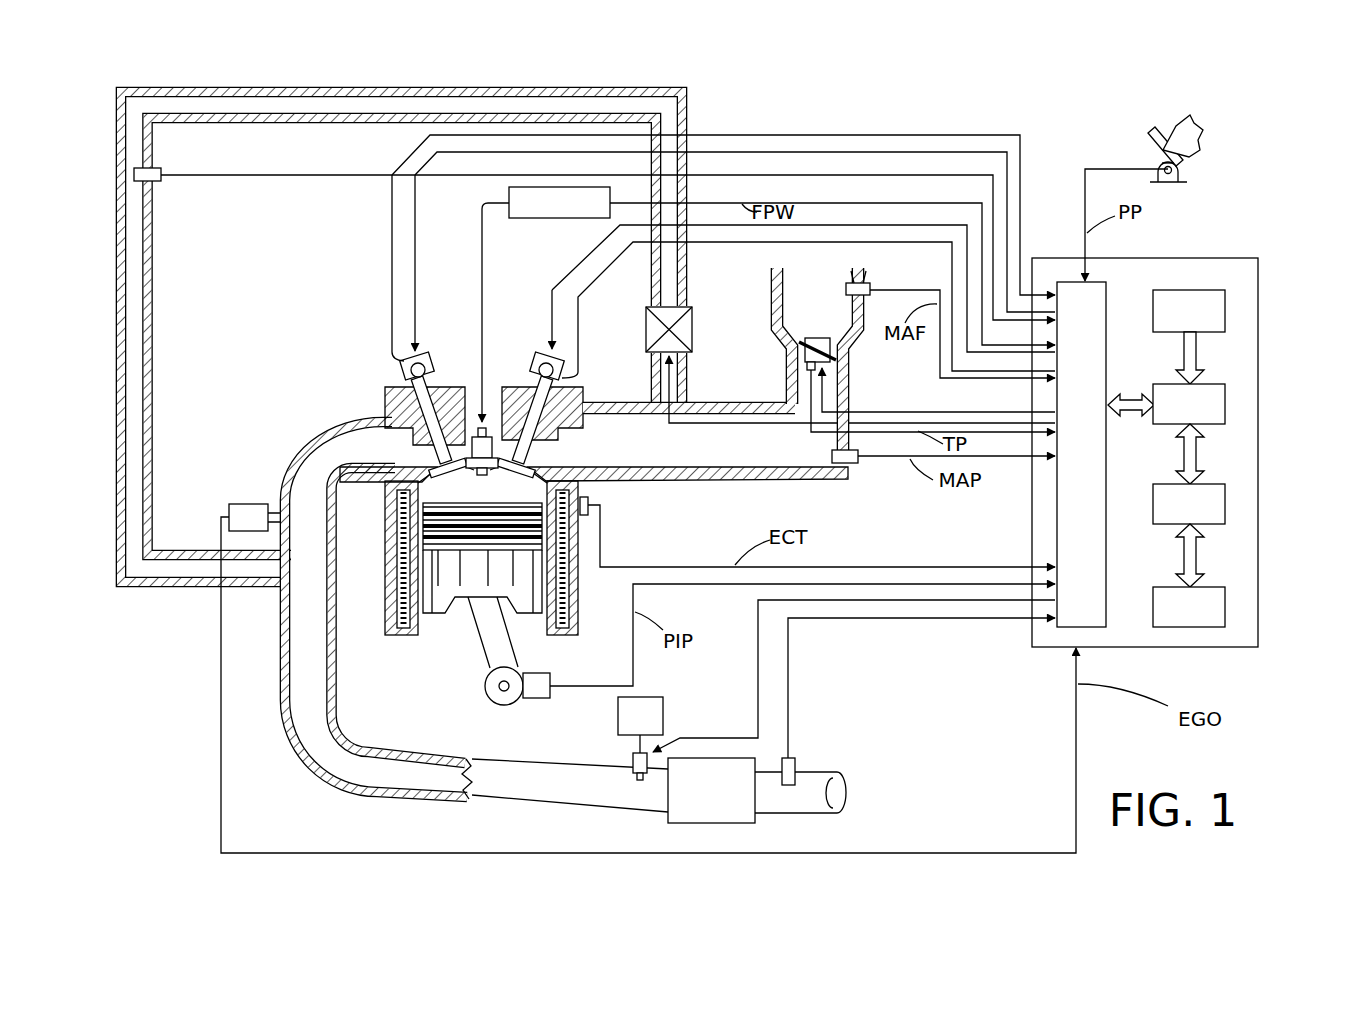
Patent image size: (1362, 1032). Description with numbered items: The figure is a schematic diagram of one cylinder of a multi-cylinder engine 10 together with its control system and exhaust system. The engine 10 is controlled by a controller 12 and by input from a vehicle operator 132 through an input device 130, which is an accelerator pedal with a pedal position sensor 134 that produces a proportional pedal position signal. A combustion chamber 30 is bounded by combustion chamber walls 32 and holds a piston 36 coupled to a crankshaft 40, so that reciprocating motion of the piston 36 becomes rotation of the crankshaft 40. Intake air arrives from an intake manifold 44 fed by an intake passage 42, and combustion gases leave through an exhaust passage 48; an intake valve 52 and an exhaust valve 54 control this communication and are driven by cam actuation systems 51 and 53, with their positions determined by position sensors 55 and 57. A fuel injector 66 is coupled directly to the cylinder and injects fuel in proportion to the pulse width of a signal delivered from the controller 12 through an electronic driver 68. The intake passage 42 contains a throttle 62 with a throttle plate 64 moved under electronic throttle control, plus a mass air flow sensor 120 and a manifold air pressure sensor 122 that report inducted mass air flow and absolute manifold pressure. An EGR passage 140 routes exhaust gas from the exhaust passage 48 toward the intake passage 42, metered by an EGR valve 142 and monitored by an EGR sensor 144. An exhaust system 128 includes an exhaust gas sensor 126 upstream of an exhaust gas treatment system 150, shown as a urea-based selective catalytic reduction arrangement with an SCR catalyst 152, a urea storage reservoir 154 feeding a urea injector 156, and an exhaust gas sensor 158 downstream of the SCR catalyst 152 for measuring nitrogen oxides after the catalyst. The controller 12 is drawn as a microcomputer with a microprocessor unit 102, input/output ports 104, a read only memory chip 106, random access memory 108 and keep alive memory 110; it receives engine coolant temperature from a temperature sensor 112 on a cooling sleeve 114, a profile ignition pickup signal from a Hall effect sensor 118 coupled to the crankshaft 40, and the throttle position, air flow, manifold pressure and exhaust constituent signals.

The engine 10 is at (318, 338).
The controller 12 is at (1248, 258).
The combustion chamber 30 is at (457, 488).
The combustion chamber walls 32 is at (423, 624).
The piston 36 is at (467, 620).
The crankshaft 40 is at (493, 701).
The intake passage 42 is at (817, 359).
The intake manifold 44 is at (688, 444).
The exhaust passage 48 is at (388, 460).
The cam actuation system 51 is at (537, 358).
The intake valve 52 is at (522, 449).
The cam actuation system 53 is at (427, 358).
The exhaust valve 54 is at (432, 456).
The position sensor 55 is at (563, 381).
The position sensor 57 is at (400, 373).
The throttle 62 is at (833, 351).
The throttle plate 64 is at (800, 346).
The fuel injector 66 is at (486, 425).
The electronic driver 68 is at (592, 219).
The microprocessor unit 102 is at (1226, 398).
The input/output ports 104 is at (1108, 290).
The read only memory chip 106 is at (1226, 305).
The random access memory 108 is at (1226, 498).
The keep alive memory 110 is at (1226, 601).
The temperature sensor 112 is at (593, 506).
The cooling sleeve 114 is at (563, 588).
The Hall effect sensor 118 is at (540, 699).
The mass air flow sensor 120 is at (866, 283).
The manifold air pressure sensor 122 is at (855, 464).
The exhaust gas sensor 126 is at (229, 506).
The exhaust system 128 is at (316, 789).
The input device 130 is at (1146, 141).
The vehicle operator 132 is at (1198, 133).
The pedal position sensor 134 is at (1180, 171).
The EGR passage 140 is at (397, 90).
The EGR valve 142 is at (692, 329).
The EGR sensor 144 is at (158, 181).
The exhaust gas treatment system 150 is at (800, 714).
The SCR catalyst 152 is at (711, 790).
The urea storage reservoir 154 is at (836, 676).
The urea injector 156 is at (633, 762).
The exhaust gas sensor 158 is at (797, 762).